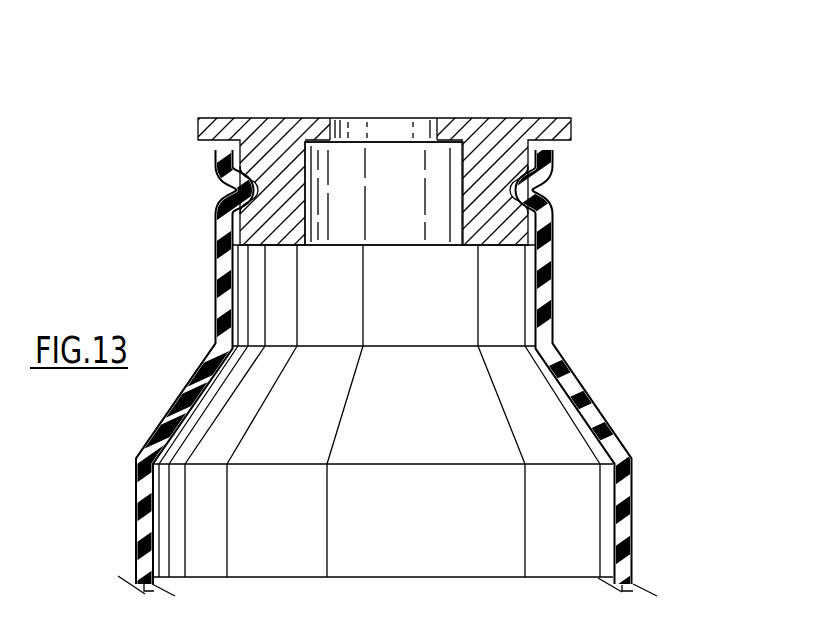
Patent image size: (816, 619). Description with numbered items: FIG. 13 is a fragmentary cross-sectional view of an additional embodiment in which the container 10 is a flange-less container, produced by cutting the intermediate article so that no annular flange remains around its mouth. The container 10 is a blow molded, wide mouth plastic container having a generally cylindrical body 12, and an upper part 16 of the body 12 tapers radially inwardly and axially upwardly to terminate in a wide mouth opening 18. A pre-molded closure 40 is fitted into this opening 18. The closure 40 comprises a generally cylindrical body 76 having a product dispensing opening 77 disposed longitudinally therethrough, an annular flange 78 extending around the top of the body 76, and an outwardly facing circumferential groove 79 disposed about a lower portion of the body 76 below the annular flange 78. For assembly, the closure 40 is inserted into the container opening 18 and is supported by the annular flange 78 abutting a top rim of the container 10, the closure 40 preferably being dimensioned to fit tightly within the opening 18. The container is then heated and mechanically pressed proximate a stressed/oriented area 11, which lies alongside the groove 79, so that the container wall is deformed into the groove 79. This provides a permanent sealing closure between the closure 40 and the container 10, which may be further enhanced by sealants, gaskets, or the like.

The container 10 is at (686, 523).
The stressed/oriented area 11 is at (205, 193).
The body 12 is at (633, 482).
The upper part 16 is at (595, 403).
The opening 18 is at (356, 352).
The closure 40 is at (383, 135).
The body 76 is at (492, 142).
The product dispensing opening 77 is at (378, 148).
The annular flange 78 is at (556, 128).
The circumferential groove 79 is at (260, 188).